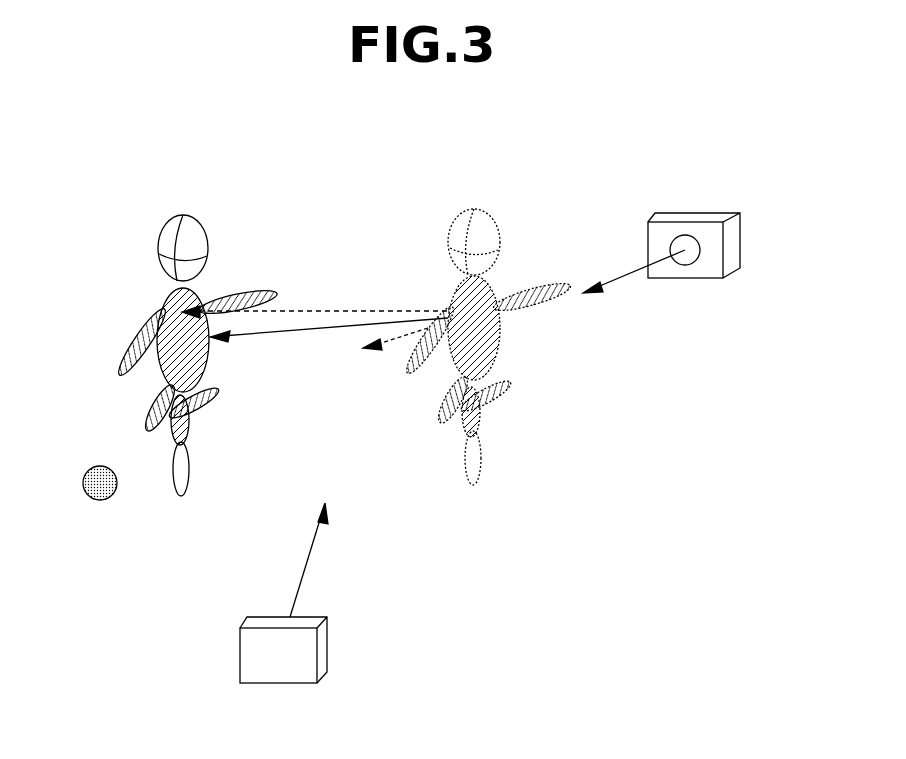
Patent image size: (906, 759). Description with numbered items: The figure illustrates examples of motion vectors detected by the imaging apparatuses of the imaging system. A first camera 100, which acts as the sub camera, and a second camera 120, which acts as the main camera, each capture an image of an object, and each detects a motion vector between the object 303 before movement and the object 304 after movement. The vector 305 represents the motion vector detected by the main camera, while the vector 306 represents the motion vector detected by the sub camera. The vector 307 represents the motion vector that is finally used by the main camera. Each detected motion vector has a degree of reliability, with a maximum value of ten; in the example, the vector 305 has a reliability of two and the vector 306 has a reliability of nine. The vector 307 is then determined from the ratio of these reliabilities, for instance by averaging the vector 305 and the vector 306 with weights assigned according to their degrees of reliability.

The first camera 100 is at (698, 213).
The second camera 120 is at (240, 658).
The object before movement 303 is at (490, 210).
The object after movement 304 is at (203, 214).
The vector 305 is at (393, 338).
The vector 306 is at (332, 310).
The vector 307 is at (279, 336).